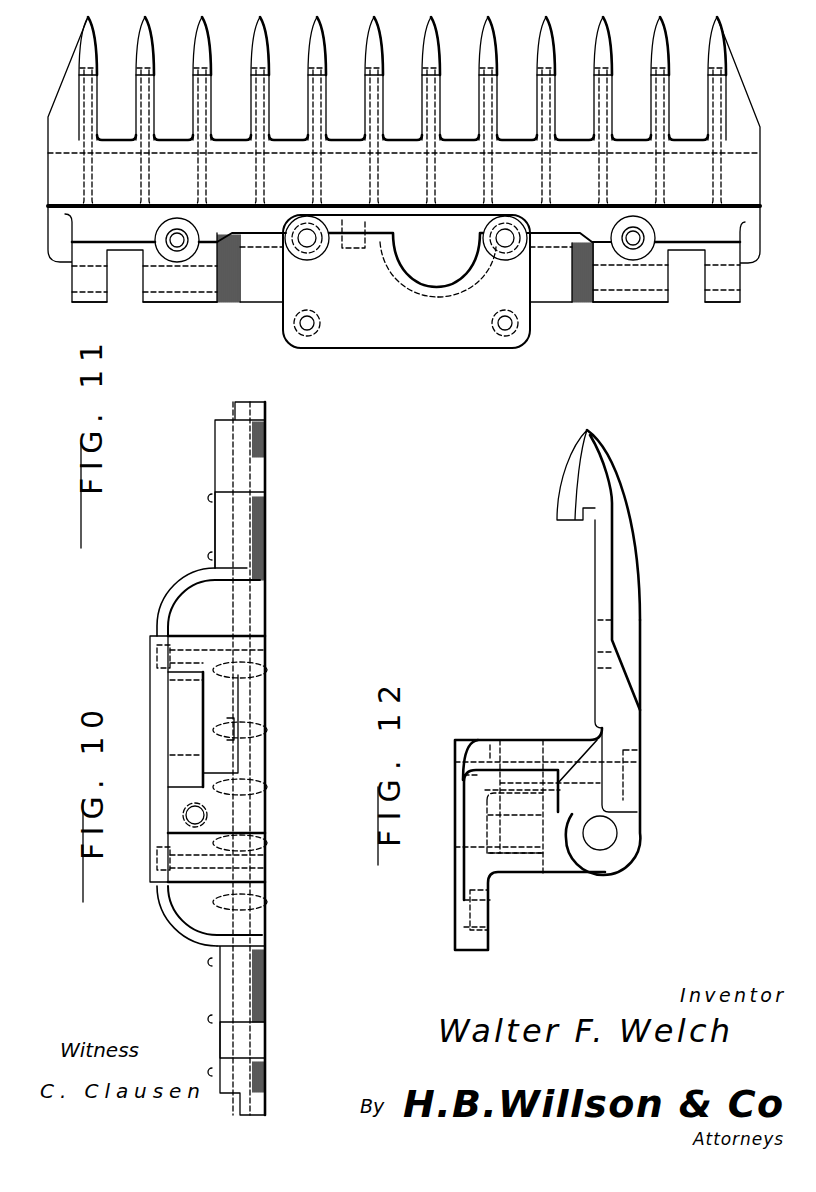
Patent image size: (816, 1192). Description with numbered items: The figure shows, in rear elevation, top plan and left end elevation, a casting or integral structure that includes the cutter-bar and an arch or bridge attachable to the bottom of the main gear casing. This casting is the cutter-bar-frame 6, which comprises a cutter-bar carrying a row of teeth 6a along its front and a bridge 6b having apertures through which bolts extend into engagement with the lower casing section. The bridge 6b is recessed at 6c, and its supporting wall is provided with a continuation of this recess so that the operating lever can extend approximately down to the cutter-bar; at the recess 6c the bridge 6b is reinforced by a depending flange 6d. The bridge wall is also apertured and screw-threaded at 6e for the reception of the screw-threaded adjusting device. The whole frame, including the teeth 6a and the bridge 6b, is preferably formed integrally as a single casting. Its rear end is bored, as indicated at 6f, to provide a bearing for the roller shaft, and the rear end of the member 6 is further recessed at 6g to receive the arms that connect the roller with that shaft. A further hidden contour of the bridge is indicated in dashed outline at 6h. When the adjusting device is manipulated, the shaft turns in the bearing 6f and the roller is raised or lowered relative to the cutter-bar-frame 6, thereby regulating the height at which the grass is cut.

In FIG. 11, the cutter-bar-frame 6 is at (616, 303).
In FIG. 10, the cutter-bar-frame 6 is at (270, 705).
In FIG. 12, the cutter-bar-frame 6 is at (585, 691).
In FIG. 11, the teeth 6a is at (378, 80).
In FIG. 12, the teeth 6a is at (602, 532).
In FIG. 11, the bridge 6b is at (520, 293).
In FIG. 10, the bridge 6b is at (157, 692).
In FIG. 12, the bridge 6b is at (473, 878).
In FIG. 11, the recess 6c is at (406, 260).
In FIG. 10, the recess 6c is at (186, 775).
In FIG. 12, the recess 6c is at (500, 850).
In FIG. 11, the depending flange 6d is at (400, 281).
In FIG. 10, the depending flange 6d is at (202, 729).
In FIG. 12, the depending flange 6d is at (527, 863).
In FIG. 11, the screw-threaded aperture 6e is at (348, 243).
In FIG. 10, the screw-threaded aperture 6e is at (187, 812).
In FIG. 12, the screw-threaded aperture 6e is at (500, 748).
In FIG. 11, the bore 6f is at (647, 293).
In FIG. 12, the bore 6f is at (603, 848).
In FIG. 11, the recess 6g is at (692, 270).
In FIG. 10, the recess 6g is at (257, 1032).
In FIG. 11, the curved recess 6h is at (434, 301).